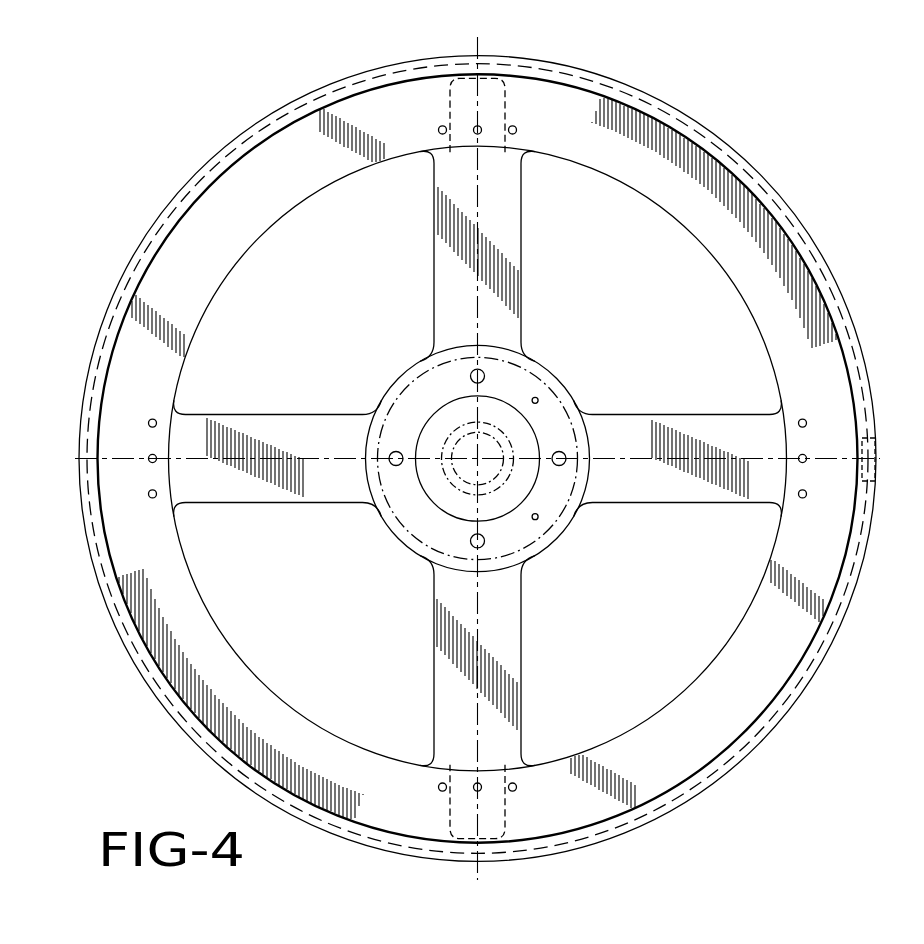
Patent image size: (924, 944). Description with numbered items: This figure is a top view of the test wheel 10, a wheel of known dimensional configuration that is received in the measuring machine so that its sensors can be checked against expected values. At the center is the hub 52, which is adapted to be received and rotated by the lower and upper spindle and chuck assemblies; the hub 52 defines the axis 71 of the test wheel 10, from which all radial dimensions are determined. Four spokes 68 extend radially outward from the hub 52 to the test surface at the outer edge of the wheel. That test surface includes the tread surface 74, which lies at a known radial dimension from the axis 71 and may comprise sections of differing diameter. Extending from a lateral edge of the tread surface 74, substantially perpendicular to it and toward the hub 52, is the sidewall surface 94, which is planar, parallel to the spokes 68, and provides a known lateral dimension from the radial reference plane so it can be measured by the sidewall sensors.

The test wheel 10 is at (769, 96).
The hub 52 is at (567, 373).
The spokes 68 is at (495, 202).
The axis 71 is at (477, 460).
The tread surface 74 is at (823, 252).
The sidewall surface 94 is at (226, 216).